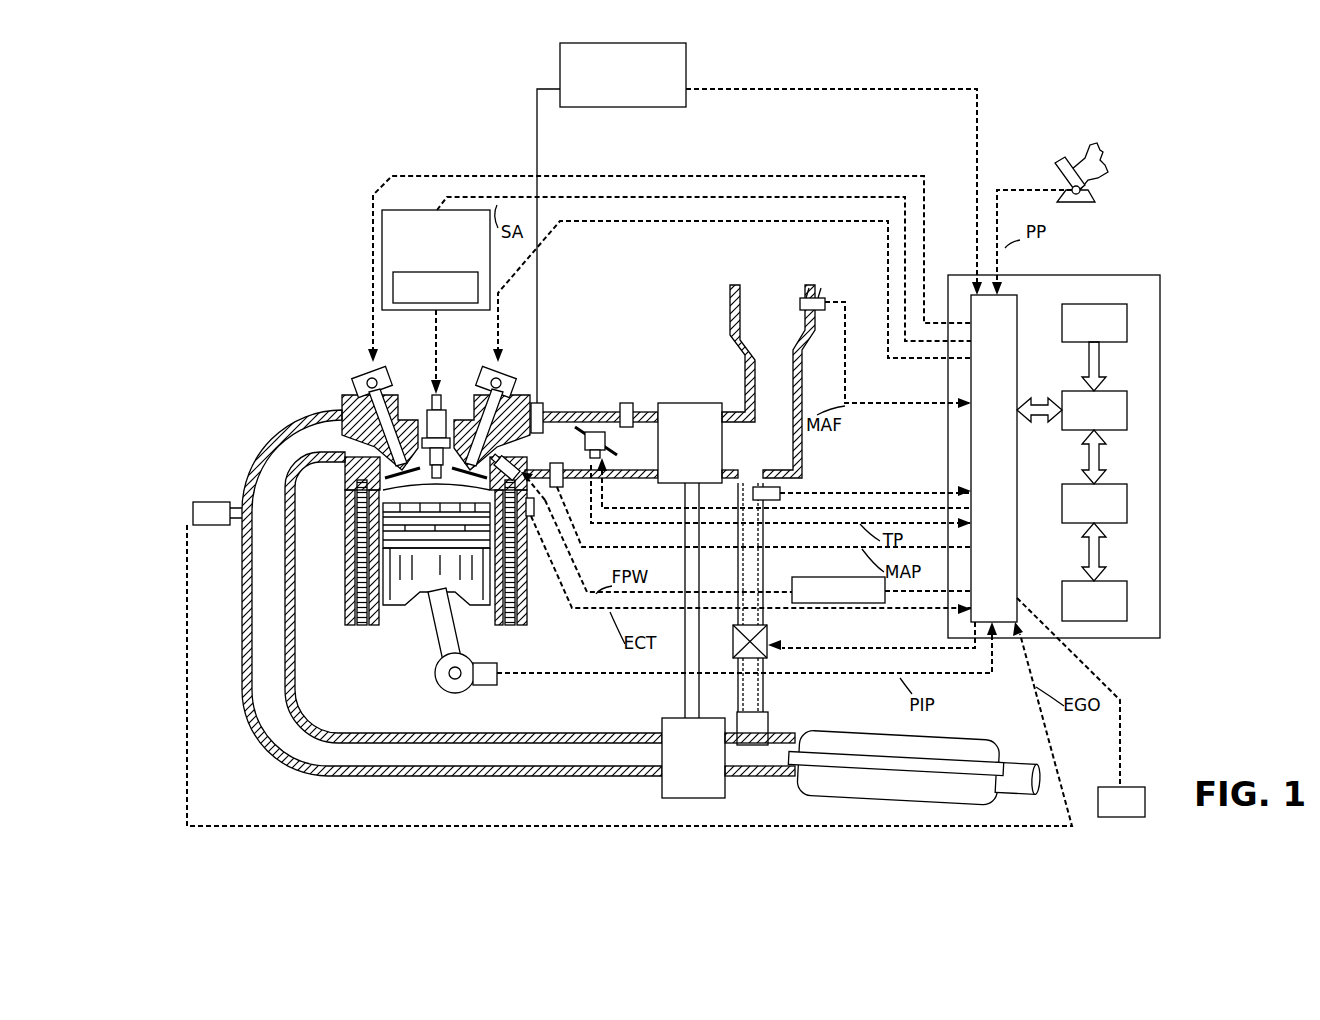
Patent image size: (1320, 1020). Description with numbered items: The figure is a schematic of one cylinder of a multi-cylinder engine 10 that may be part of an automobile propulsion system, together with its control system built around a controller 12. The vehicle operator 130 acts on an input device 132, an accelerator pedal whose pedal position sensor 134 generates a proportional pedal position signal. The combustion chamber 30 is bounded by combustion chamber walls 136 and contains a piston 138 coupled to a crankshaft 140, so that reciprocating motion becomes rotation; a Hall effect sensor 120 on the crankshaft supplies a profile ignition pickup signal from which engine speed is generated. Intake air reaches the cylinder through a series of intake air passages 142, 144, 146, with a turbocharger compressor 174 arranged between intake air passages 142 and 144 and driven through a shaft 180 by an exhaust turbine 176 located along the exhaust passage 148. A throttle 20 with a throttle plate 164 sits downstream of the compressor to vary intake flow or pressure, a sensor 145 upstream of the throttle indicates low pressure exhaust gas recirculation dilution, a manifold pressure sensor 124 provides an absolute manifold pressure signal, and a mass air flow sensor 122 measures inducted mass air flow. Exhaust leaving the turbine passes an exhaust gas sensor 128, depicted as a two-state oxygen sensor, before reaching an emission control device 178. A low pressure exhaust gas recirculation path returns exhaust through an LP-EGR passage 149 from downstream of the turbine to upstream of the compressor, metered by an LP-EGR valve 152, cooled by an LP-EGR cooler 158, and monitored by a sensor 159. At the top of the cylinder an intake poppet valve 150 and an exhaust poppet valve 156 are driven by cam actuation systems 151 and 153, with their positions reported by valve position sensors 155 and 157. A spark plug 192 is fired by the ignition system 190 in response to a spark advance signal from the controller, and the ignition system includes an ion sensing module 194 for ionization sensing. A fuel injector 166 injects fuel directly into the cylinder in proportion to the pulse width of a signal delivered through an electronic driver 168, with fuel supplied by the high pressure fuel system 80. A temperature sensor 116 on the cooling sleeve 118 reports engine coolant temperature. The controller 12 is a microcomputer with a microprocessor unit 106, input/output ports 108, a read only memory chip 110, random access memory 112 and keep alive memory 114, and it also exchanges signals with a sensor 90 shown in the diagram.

The engine 10 is at (185, 118).
The controller 12 is at (1160, 275).
The throttle 20 is at (590, 430).
The combustion chamber 30 is at (414, 541).
The high pressure fuel system 80 is at (686, 52).
The sensor 90 is at (1111, 812).
The microprocessor unit 106 is at (1127, 410).
The input/output ports 108 is at (1017, 306).
The read only memory chip 110 is at (1127, 322).
The random access memory 112 is at (1127, 503).
The keep alive memory 114 is at (1127, 600).
The temperature sensor 116 is at (540, 512).
The cooling sleeve 118 is at (522, 608).
The Hall effect sensor 120 is at (485, 688).
The mass air flow sensor 122 is at (820, 299).
The manifold pressure sensor 124 is at (580, 530).
The exhaust gas sensor 128 is at (192, 504).
The vehicle operator 130 is at (1112, 160).
The input device 132 is at (1058, 170).
The pedal position sensor 134 is at (1090, 194).
The combustion chamber walls 136 is at (380, 625).
The piston 138 is at (425, 575).
The crankshaft 140 is at (450, 693).
The intake air passage 142 is at (765, 330).
The intake manifold 144 is at (620, 450).
The sensor 145 is at (630, 402).
The intake air passage 146 is at (540, 450).
The exhaust passage 148 is at (302, 465).
The LP-EGR passage 149 is at (765, 700).
The intake poppet valve 150 is at (446, 428).
The cam actuation system 151 is at (488, 368).
The LP-EGR valve 152 is at (732, 648).
The cam actuation system 153 is at (378, 368).
The valve position sensor 155 is at (508, 366).
The exhaust poppet valve 156 is at (372, 433).
The valve position sensor 157 is at (357, 378).
The LP-EGR cooler 158 is at (768, 737).
The sensor 159 is at (757, 487).
The throttle plate 164 is at (545, 410).
The fuel injector 166 is at (517, 473).
The electronic driver 168 is at (820, 578).
The compressor 174 is at (676, 402).
The exhaust turbine 176 is at (662, 790).
The emission control device 178 is at (960, 732).
The shaft 180 is at (684, 690).
The ignition system 190 is at (402, 210).
The spark plug 192 is at (432, 418).
The ion sensing module 194 is at (393, 289).